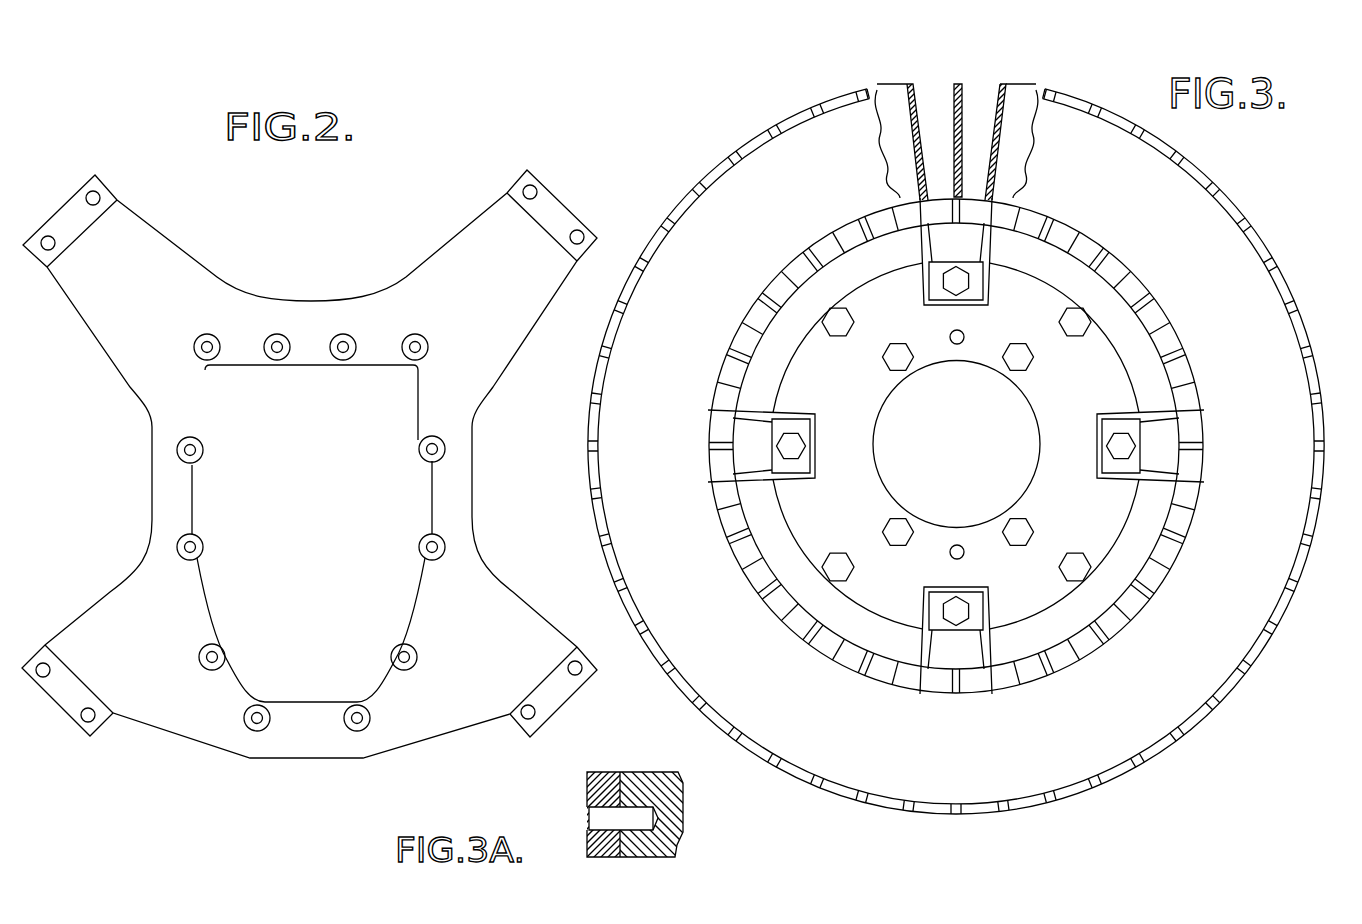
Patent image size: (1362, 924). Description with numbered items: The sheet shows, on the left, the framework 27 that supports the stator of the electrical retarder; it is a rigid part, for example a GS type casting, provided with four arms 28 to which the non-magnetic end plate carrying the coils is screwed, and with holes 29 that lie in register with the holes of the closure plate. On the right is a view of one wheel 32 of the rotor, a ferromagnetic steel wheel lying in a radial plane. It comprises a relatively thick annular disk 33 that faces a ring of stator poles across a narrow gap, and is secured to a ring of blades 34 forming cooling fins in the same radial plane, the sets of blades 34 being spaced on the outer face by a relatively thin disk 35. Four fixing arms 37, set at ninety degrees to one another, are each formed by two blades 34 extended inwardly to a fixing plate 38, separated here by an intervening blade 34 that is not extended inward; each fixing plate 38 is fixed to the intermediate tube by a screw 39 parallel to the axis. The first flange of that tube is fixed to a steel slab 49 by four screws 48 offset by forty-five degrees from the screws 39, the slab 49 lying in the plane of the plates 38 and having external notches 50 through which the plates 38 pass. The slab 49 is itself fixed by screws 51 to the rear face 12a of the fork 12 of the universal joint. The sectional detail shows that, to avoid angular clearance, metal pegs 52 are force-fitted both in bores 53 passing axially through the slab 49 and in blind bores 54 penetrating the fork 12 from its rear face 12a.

In FIG. 3A, the fork 12 is at (667, 845).
In FIG. 3A, the rear face 12a is at (627, 783).
In FIG. 2, the framework 27 is at (318, 278).
In FIG. 2, the arms 28 is at (143, 242).
In FIG. 2, the holes 29 is at (357, 705).
In FIG. 3, the wheels 32 is at (1062, 85).
In FIG. 3, the annular disk 33 is at (937, 118).
In FIG. 3, the blades 34 is at (960, 153).
In FIG. 3, the thin disk 35 is at (1218, 260).
In FIG. 3, the fixing arms 37 is at (992, 233).
In FIG. 3, the fixing plate 38 is at (935, 273).
In FIG. 3, the screw 39 is at (960, 272).
In FIG. 3, the screws 48 is at (822, 322).
In FIG. 3, the slab 49 is at (817, 525).
In FIG. 3A, the slab 49 is at (600, 845).
In FIG. 3, the external notches 50 is at (927, 288).
In FIG. 3, the screws 51 is at (1015, 529).
In FIG. 3, the metal pegs 52 is at (957, 345).
In FIG. 3A, the metal pegs 52 is at (610, 822).
In FIG. 3A, the bores 53 is at (587, 795).
In FIG. 3A, the blind bores 54 is at (652, 848).